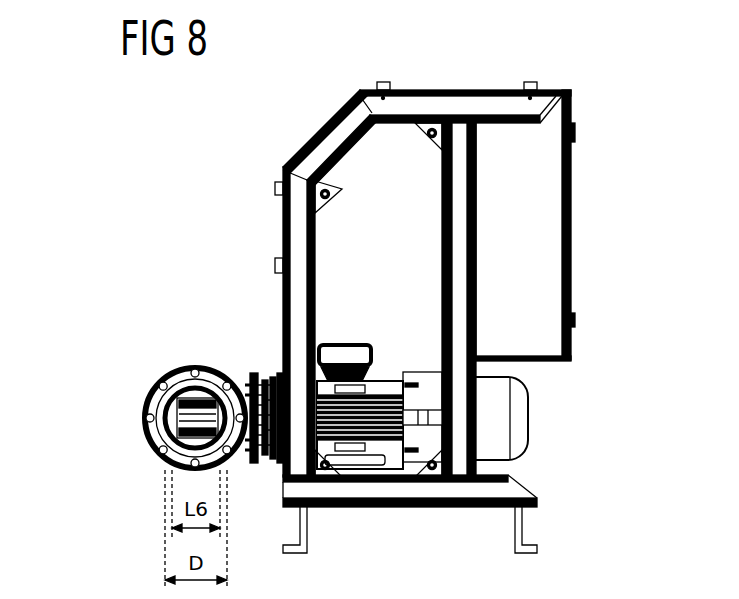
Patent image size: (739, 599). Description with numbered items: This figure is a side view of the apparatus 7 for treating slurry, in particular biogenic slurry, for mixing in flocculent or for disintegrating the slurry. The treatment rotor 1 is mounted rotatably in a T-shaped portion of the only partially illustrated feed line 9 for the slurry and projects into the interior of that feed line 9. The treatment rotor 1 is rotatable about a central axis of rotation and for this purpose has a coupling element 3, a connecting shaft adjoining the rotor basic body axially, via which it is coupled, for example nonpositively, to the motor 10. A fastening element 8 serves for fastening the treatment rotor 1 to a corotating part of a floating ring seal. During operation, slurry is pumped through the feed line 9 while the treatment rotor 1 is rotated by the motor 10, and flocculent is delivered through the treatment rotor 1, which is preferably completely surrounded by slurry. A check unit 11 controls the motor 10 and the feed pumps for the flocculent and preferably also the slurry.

The treatment rotor 1 is at (193, 438).
The coupling element 3 is at (215, 378).
The apparatus 7 is at (236, 156).
The fastening element 8 is at (259, 338).
The feed line 9 is at (152, 400).
The motor 10 is at (518, 414).
The check unit 11 is at (530, 224).